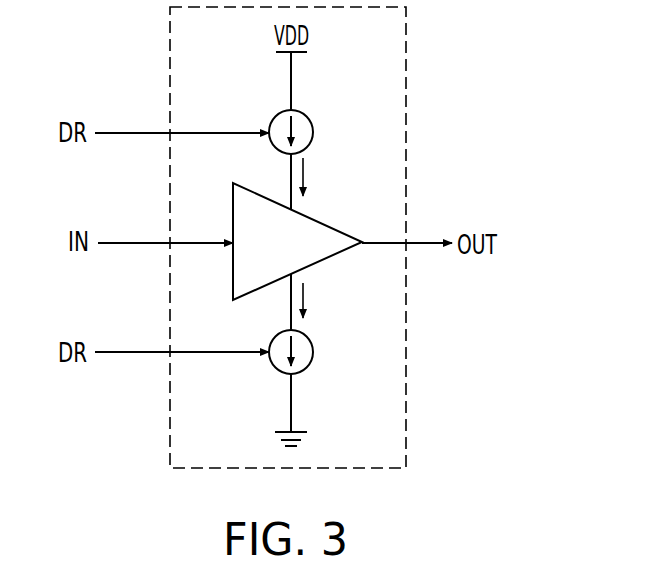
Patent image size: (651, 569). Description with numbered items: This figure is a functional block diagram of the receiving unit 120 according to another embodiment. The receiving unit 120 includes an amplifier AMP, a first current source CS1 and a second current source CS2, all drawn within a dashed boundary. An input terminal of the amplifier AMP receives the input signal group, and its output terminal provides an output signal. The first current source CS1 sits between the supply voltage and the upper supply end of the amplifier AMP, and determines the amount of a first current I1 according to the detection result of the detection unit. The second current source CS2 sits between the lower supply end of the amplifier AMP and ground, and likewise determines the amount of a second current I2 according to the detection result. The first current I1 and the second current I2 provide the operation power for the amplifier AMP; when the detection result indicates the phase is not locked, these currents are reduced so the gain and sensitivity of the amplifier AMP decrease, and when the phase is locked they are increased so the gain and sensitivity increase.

The receiving unit 120 is at (406, 396).
The first current source CS1 is at (305, 113).
The second current source CS2 is at (313, 352).
The amplifier AMP is at (328, 258).
The first current I1 is at (317, 177).
The second current I2 is at (318, 303).